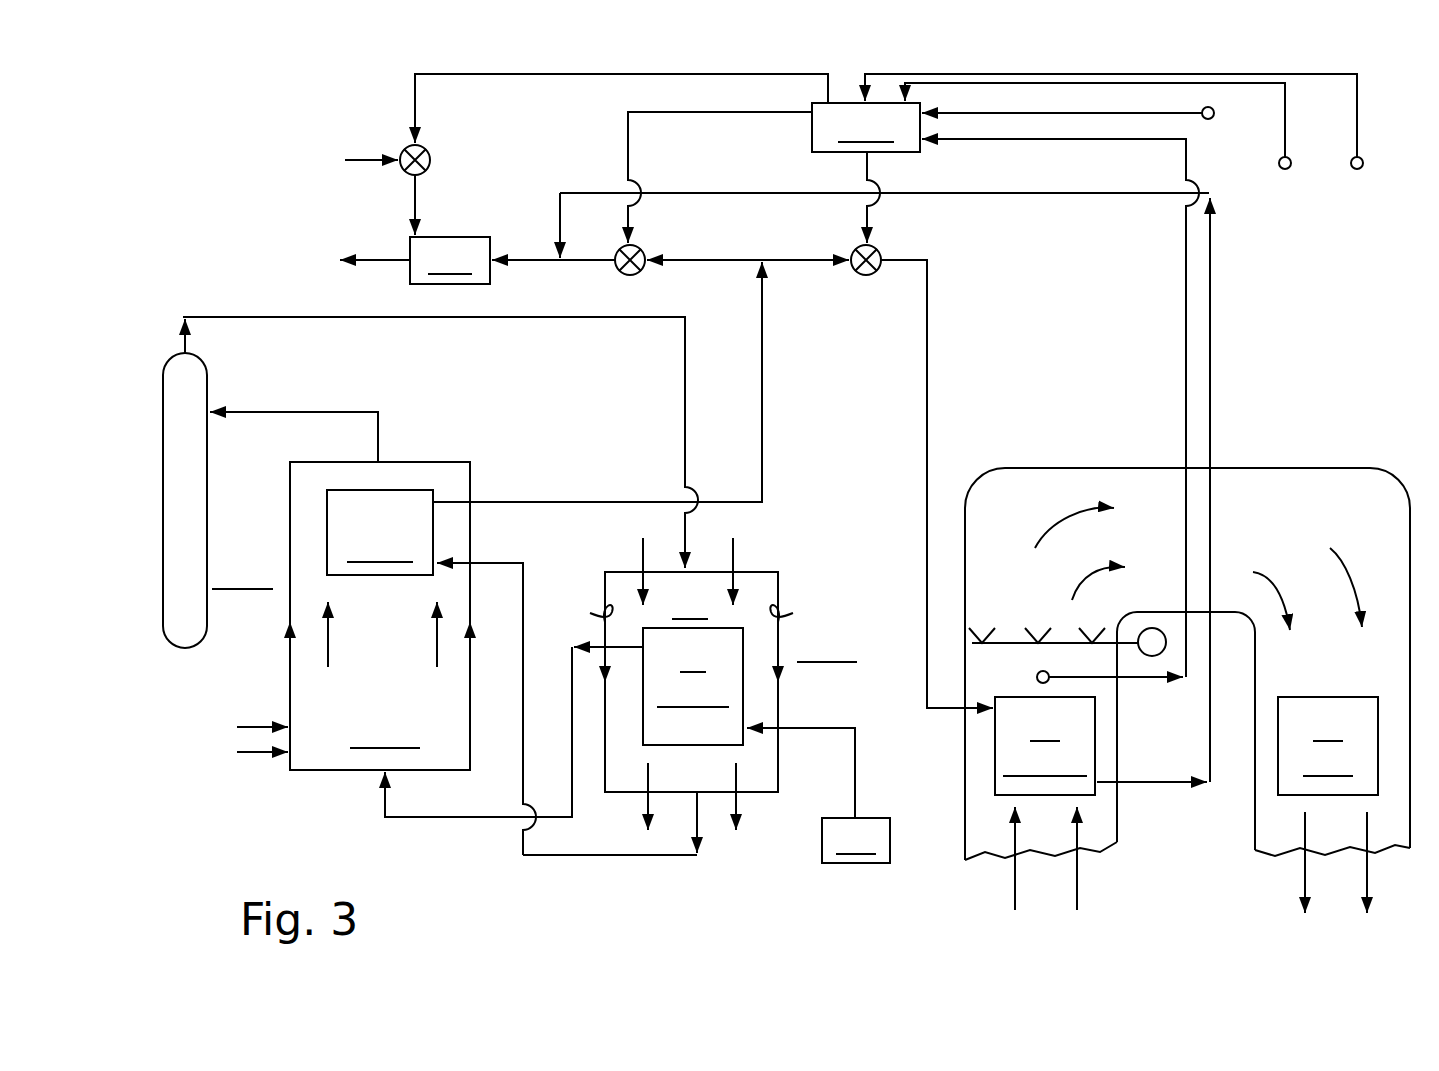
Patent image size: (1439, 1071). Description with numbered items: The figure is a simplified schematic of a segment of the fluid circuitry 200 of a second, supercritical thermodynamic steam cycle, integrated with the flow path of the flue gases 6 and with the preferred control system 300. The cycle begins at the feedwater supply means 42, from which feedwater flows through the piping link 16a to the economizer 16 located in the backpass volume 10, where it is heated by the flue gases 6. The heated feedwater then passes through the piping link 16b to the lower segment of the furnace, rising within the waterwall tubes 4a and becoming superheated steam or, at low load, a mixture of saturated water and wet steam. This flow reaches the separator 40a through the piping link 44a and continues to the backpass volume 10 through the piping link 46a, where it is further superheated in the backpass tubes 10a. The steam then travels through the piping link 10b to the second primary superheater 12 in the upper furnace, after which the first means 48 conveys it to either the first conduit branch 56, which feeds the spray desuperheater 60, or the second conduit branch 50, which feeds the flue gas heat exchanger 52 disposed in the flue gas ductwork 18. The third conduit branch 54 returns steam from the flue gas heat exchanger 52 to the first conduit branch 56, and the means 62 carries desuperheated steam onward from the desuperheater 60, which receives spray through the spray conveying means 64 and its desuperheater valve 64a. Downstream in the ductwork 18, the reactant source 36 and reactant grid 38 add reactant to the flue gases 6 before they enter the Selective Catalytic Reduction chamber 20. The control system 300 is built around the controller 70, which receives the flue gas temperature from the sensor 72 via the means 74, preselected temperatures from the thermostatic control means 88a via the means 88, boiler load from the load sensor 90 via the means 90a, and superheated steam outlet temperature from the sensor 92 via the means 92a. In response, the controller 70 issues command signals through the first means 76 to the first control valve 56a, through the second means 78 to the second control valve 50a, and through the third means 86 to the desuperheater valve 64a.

The control system 300 is at (1305, 260).
The fluid circuitry 200 is at (587, 924).
The waterwall tubes 4a is at (291, 691).
The flue gases 6 is at (432, 647).
The backpass volume 10 is at (734, 682).
The backpass tubes 10a is at (590, 613).
The piping link 10b is at (510, 563).
The second primary superheater 12 is at (380, 532).
The economizer 16 is at (693, 686).
The piping link 16a is at (855, 775).
The piping link 16b is at (495, 818).
The flue gas ductwork 18 is at (1050, 468).
The Selective Catalytic Reduction chamber 20 is at (1328, 746).
The reactant source 36 is at (1152, 656).
The reactant grid 38 is at (1063, 643).
The separator 40a is at (207, 465).
The feedwater supply means 42 is at (890, 855).
The piping link 44a is at (260, 411).
The piping link 46a is at (402, 318).
The first means for conveying superheated steam 48 is at (762, 390).
The second conduit branch 50 is at (843, 256).
The second control valve 50a is at (879, 251).
The flue gas heat exchanger 52 is at (1101, 746).
The third conduit branch 54 is at (607, 192).
The first conduit branch 56 is at (712, 258).
The first control valve 56a is at (643, 253).
The spray desuperheater 60 is at (408, 270).
The means for conveying desuperheated steam 62 is at (382, 257).
The spray conveying means 64 is at (413, 193).
The desuperheater valve 64a is at (408, 148).
The controller 70 is at (915, 152).
The flue gas temperature sensor 72 is at (1037, 677).
The means for conveying a flue gas temperature signal 74 is at (1098, 140).
The first means for conveying a first valve command signal 76 is at (626, 128).
The second means for conveying a second valve command signal 78 is at (873, 226).
The third means for conveying a desuperheater command signal 86 is at (465, 76).
The means for conveying preselected temperature signal 88 is at (1060, 112).
The thermostatic control means 88a is at (1204, 109).
The boiler load sensor 90 is at (1364, 163).
The means for conveying a boiler load signal 90a is at (1360, 115).
The superheated steam outlet temperature sensor 92 is at (1291, 163).
The means for conveying a superheated steam outlet temperature signal 92a is at (1288, 118).